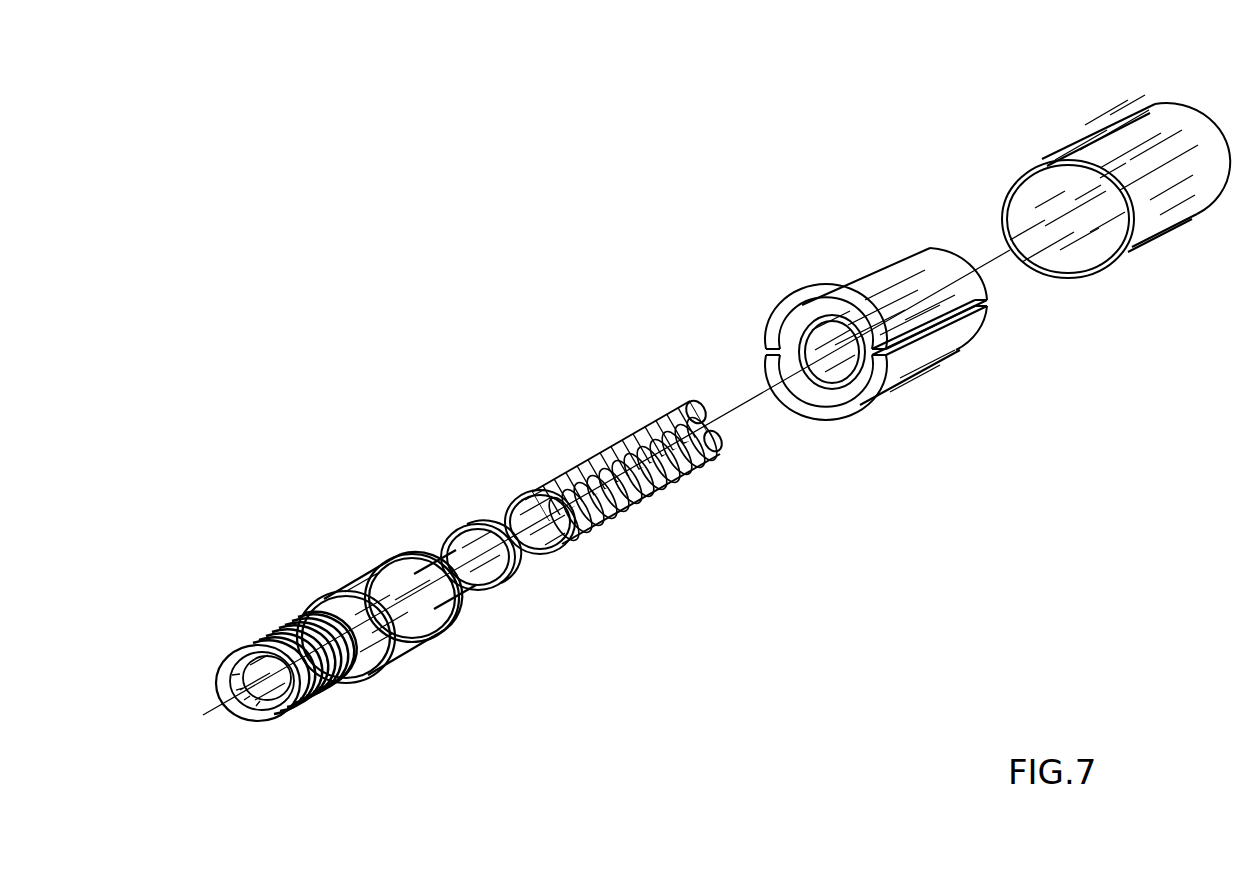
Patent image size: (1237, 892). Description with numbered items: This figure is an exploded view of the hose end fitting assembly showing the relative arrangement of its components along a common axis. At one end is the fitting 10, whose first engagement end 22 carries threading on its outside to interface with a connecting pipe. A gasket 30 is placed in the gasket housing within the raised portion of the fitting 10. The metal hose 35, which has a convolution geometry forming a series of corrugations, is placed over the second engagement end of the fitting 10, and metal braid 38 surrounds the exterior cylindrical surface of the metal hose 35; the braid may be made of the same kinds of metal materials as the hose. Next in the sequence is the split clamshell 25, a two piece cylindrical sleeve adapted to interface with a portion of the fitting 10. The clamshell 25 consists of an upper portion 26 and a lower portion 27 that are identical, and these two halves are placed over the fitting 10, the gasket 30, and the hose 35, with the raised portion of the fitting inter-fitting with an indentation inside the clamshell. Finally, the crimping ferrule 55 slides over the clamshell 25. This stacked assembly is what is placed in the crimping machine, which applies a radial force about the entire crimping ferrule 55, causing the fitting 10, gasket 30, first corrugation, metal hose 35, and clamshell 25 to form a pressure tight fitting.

The fitting 10 is at (346, 662).
The first engagement end 22 is at (262, 716).
The split clamshell 25 is at (853, 320).
The upper portion 26 is at (883, 262).
The lower portion 27 is at (842, 418).
The gasket 30 is at (481, 517).
The metal hose 35 is at (543, 528).
The metal braid 38 is at (643, 498).
The crimping ferrule 55 is at (1103, 127).